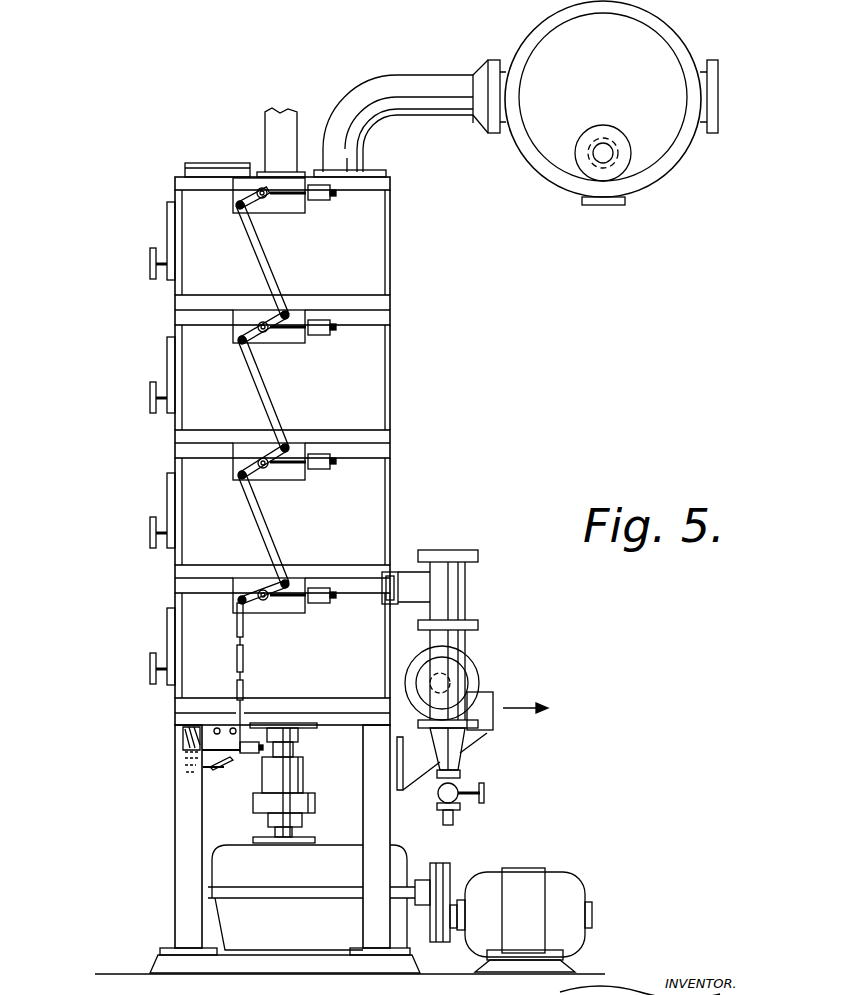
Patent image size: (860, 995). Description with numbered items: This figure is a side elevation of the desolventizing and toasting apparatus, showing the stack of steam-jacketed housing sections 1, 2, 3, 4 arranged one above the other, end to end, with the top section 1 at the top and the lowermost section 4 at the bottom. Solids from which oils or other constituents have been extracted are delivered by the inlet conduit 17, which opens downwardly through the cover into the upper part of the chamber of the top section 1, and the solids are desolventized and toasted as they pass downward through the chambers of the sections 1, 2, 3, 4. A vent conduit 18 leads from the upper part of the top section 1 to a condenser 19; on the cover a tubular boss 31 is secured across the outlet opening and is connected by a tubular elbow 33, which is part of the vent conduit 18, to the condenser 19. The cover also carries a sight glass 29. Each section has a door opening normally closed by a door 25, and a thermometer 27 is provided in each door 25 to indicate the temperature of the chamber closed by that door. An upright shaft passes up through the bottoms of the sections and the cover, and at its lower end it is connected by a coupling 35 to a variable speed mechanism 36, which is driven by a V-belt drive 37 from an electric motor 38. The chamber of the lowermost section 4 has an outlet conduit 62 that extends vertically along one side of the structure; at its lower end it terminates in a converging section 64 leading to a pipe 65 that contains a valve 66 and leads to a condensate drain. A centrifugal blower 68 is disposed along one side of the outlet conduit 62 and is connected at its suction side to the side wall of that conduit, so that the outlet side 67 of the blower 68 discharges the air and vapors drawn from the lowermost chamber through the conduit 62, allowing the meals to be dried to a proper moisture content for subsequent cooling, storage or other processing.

The top section 1 is at (400, 246).
The housing section 2 is at (406, 378).
The housing section 3 is at (402, 488).
The lowermost section 4 is at (402, 646).
The inlet conduit 17 is at (264, 117).
The vent conduit 18 is at (424, 76).
The condenser 19 is at (665, 147).
The door 25 is at (166, 223).
The thermometer 27 is at (149, 262).
The sight glass 29 is at (213, 162).
The tubular boss 31 is at (365, 160).
The tubular elbow 33 is at (358, 90).
The coupling 35 is at (293, 775).
The variable speed mechanism 36 is at (302, 905).
The V-belt drive 37 is at (452, 862).
The electric motor 38 is at (532, 872).
The outlet conduit 62 is at (440, 588).
The converging section 64 is at (458, 758).
The pipe 65 is at (455, 820).
The valve 66 is at (465, 790).
The outlet side of blower 67 is at (487, 702).
The blower 68 is at (470, 658).